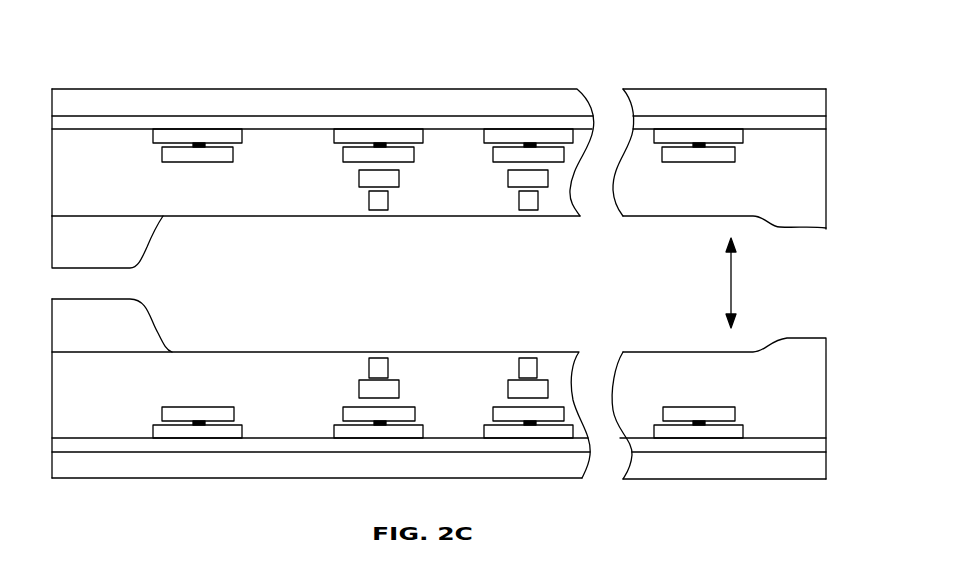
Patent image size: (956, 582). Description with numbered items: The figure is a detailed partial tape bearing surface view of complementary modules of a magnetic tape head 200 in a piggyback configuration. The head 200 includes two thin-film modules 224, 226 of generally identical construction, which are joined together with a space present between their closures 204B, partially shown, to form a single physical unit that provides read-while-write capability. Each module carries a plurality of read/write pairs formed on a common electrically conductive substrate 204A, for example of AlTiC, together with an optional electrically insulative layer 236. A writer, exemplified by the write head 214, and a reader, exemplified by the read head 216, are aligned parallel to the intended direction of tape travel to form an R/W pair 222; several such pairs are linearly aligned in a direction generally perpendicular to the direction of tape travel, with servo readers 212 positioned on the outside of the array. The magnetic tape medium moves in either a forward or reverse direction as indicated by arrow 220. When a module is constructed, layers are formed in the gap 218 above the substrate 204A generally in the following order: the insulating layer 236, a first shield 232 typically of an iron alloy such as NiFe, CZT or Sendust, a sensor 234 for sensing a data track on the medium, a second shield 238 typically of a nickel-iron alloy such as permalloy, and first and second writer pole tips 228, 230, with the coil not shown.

The magnetic tape head 200 is at (369, 70).
The substrate 204A is at (178, 112).
The closure 204B is at (147, 247).
The servo reader 212 is at (242, 396).
The write head 214 is at (372, 357).
The read head 216 is at (363, 407).
The gap 218 is at (242, 216).
The arrow 220 is at (731, 287).
The R/W pair 222 is at (415, 283).
The thin-film module 224 is at (752, 89).
The thin-film module 226 is at (737, 479).
The first writer pole tip 228 is at (358, 386).
The second writer pole tip 230 is at (370, 362).
The first shield 232 is at (335, 431).
The sensor 234 is at (326, 416).
The insulating layer 236 is at (817, 431).
The second shield 238 is at (340, 406).